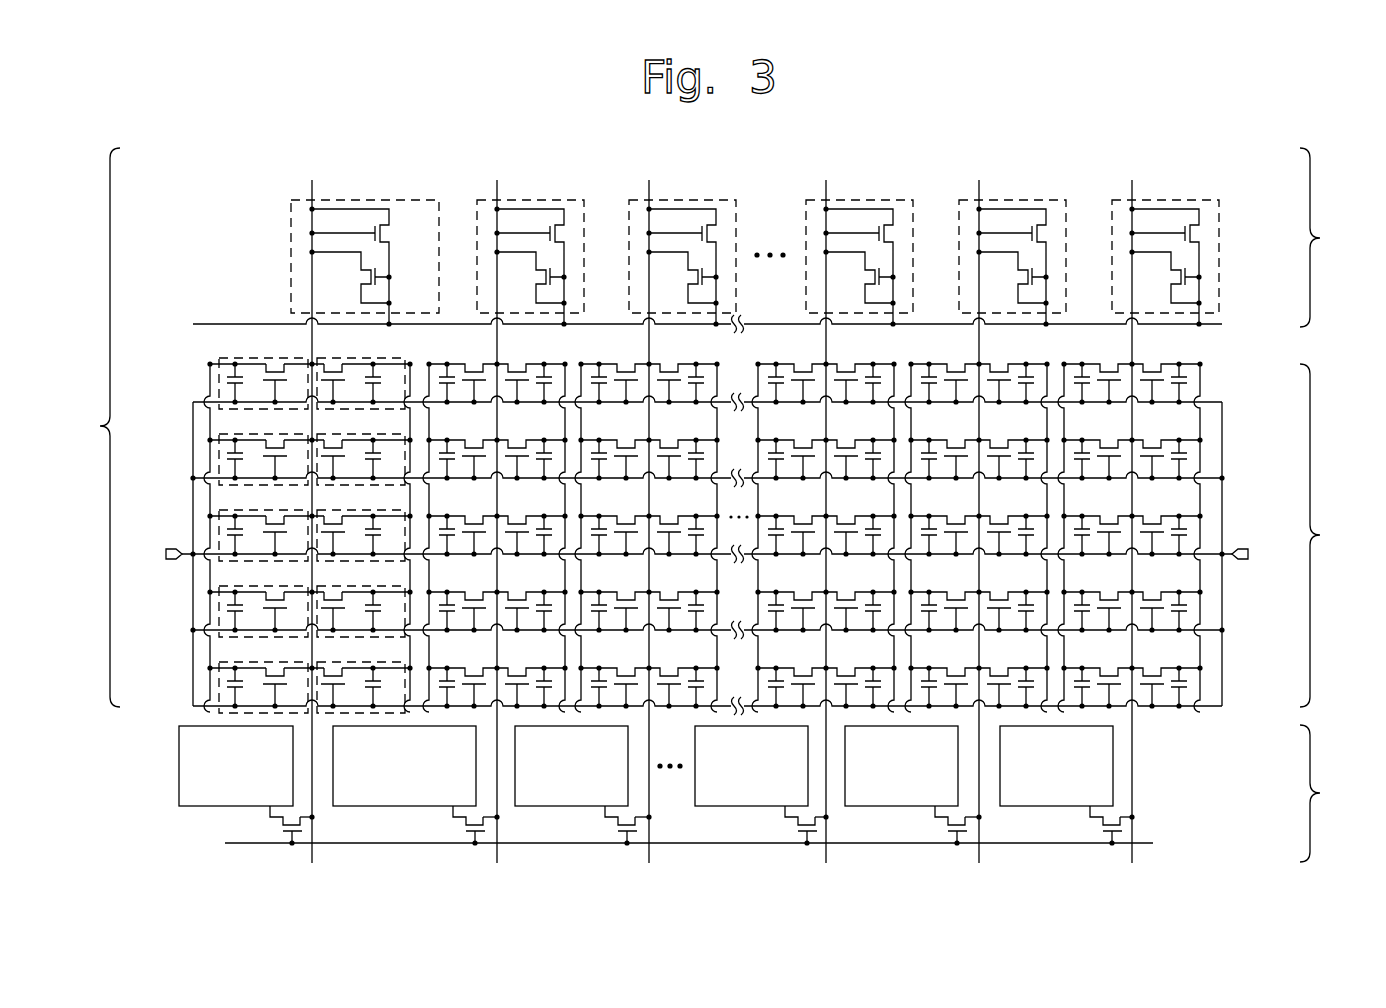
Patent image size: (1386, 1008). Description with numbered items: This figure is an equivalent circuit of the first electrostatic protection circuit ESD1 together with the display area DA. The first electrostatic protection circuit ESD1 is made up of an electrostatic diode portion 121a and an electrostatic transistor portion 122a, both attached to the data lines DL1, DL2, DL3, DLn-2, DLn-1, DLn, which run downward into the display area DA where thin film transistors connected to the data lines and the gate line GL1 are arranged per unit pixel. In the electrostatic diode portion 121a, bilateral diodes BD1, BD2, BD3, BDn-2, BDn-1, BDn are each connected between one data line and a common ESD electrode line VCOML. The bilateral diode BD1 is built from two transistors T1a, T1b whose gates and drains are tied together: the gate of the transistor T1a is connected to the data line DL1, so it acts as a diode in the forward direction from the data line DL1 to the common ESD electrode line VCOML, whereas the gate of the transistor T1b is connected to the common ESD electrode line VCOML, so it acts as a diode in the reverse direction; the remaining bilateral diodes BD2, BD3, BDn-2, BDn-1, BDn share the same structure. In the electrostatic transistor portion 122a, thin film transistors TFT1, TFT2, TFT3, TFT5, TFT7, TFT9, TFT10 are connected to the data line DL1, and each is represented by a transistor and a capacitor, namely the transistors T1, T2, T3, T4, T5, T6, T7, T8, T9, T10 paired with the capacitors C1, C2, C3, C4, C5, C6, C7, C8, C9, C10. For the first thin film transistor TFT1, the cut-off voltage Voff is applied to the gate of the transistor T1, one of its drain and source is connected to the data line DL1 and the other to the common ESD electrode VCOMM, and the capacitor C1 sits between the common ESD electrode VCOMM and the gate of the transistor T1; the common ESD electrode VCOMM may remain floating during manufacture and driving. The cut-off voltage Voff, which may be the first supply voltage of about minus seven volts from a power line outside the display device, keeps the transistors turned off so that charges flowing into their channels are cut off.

The electrostatic diode portion 121a is at (831, 235).
The electrostatic transistor portion 122a is at (710, 431).
The display area DA is at (765, 793).
The first electrostatic protection circuit ESD1 is at (231, 430).
The bilateral diode BD1 is at (365, 235).
The bilateral diode BD2 is at (558, 200).
The bilateral diode BD3 is at (710, 200).
The bilateral diode BDn-2 is at (887, 200).
The bilateral diode BDn-1 is at (1040, 200).
The bilateral diode BDn is at (1193, 200).
The data line DL1 is at (311, 511).
The data line DL2 is at (497, 511).
The data line DL3 is at (649, 511).
The data line DLn-2 is at (837, 511).
The data line DLn-1 is at (990, 511).
The data line DLn is at (1133, 511).
The transistor T1a is at (371, 266).
The transistor T1b is at (350, 277).
The first thin film transistor TFT1 is at (230, 350).
The thin film transistor TFT2 is at (328, 350).
The thin film transistor TFT3 is at (230, 426).
The thin film transistor TFT5 is at (230, 502).
The thin film transistor TFT7 is at (230, 578).
The thin film transistor TFT9 is at (230, 654).
The thin film transistor TFT10 is at (328, 654).
The capacitor C1 is at (246, 382).
The capacitor C2 is at (383, 382).
The capacitor C3 is at (246, 458).
The capacitor C4 is at (383, 458).
The capacitor C5 is at (246, 534).
The capacitor C6 is at (383, 534).
The capacitor C7 is at (246, 610).
The capacitor C8 is at (383, 610).
The capacitor C9 is at (246, 686).
The capacitor C10 is at (388, 686).
The transistor T1 is at (284, 384).
The transistor T2 is at (341, 384).
The transistor T3 is at (284, 460).
The transistor T4 is at (341, 460).
The transistor T5 is at (284, 536).
The transistor T6 is at (341, 536).
The transistor T7 is at (284, 612).
The transistor T8 is at (341, 612).
The transistor T9 is at (284, 688).
The transistor T10 is at (345, 688).
The common ESD electrode line VCOML is at (218, 324).
The common ESD electrode VCOMM is at (208, 376).
The cut-off voltage Voff is at (708, 554).
The gate line GL1 is at (1153, 843).